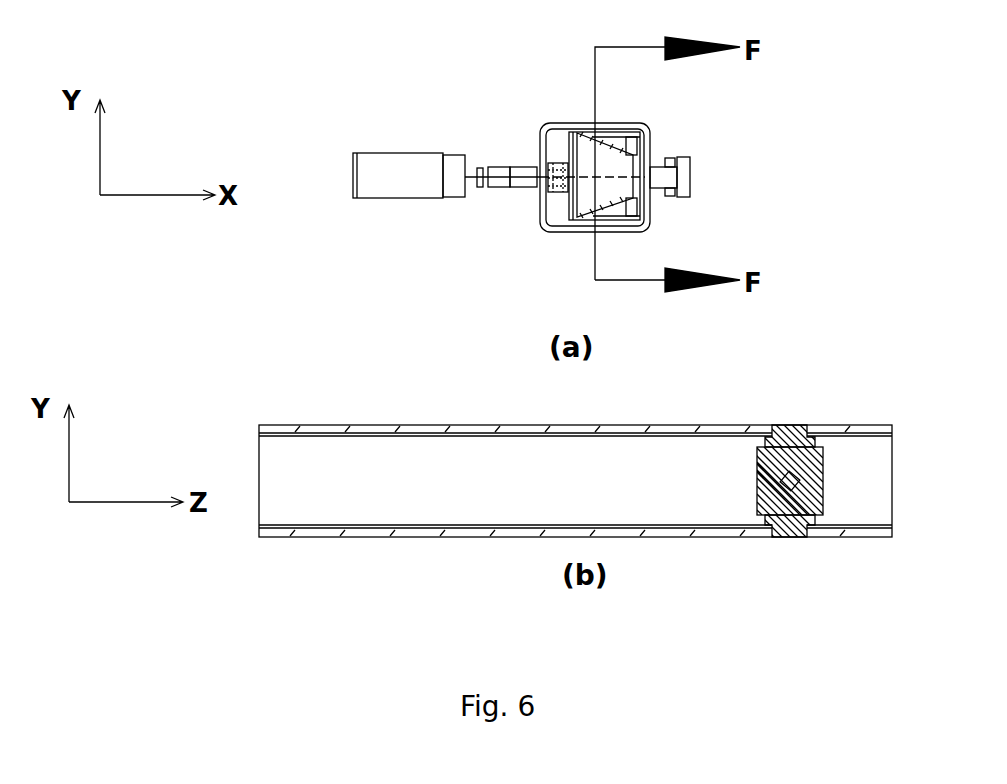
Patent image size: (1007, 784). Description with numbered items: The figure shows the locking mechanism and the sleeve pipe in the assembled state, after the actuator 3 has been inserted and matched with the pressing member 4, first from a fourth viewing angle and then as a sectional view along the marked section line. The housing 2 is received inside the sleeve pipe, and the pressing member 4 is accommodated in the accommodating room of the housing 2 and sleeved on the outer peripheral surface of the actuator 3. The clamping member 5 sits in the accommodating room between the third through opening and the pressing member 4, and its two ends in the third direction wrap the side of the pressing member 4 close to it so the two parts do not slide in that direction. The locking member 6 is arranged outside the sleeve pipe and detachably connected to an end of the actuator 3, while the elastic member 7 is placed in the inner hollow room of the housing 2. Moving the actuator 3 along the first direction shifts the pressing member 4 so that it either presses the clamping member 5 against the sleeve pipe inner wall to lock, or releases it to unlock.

The housing 2 is at (558, 122).
The actuator 3 is at (672, 175).
The pressing member 4 is at (588, 190).
The clamping member 5 is at (630, 143).
The locking member 6 is at (398, 163).
The elastic member 7 is at (563, 190).